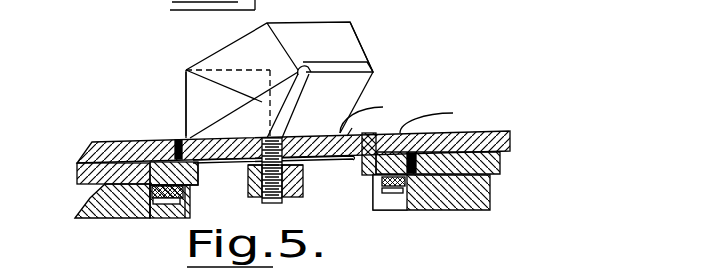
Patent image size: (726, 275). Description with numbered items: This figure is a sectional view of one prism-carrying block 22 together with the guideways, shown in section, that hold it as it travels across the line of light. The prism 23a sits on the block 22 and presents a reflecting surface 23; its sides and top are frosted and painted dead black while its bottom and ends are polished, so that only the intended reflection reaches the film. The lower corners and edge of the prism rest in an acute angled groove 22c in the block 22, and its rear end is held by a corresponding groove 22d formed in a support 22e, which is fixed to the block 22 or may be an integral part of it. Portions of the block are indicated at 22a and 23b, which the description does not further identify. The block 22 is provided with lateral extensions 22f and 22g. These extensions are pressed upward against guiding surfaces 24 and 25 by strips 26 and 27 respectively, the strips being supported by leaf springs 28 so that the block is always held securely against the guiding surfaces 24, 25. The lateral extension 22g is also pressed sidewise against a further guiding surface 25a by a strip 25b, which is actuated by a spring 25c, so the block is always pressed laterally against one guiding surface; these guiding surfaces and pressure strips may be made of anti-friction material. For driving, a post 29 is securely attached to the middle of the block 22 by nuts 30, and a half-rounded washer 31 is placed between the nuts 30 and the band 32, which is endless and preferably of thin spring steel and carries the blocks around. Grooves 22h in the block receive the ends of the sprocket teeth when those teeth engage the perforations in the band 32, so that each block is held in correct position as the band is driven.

The block 22 is at (312, 137).
The bracket foot portion 22a is at (234, 163).
The acute angled groove 22c is at (244, 105).
The groove 22d is at (342, 60).
The support 22e is at (353, 81).
The lateral extension 22f is at (443, 118).
The lateral extension 22g is at (82, 163).
The groove 22h is at (381, 115).
The reflecting surface 23 is at (186, 70).
The prism 23a is at (356, 33).
The casing side wall 23b is at (198, 90).
The guiding surface 24 is at (357, 202).
The guiding surface 25 is at (140, 140).
The guiding surface 25a is at (165, 140).
The strip 25b is at (484, 158).
The spring 25c is at (478, 174).
The strip 26 is at (383, 211).
The strip 27 is at (150, 200).
The leaf spring 28 is at (165, 215).
The post 29 is at (277, 200).
The nut 30 is at (303, 188).
The half-rounded washer 31 is at (294, 167).
The band 32 is at (363, 126).